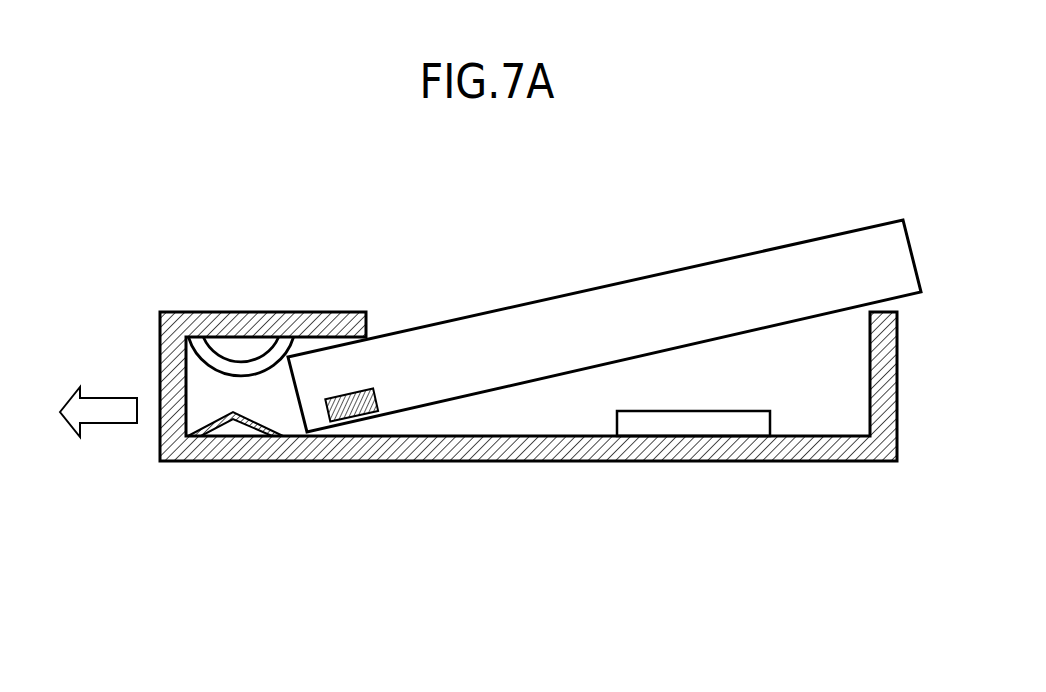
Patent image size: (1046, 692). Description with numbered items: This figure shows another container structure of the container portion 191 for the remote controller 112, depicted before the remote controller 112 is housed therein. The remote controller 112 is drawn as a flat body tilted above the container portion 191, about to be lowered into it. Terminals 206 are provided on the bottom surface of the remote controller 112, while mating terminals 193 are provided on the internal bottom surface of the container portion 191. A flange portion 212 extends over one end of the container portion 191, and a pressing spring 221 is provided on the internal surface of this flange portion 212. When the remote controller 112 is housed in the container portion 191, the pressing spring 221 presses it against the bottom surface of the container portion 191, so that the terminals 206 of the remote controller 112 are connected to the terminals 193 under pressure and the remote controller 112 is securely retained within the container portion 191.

The remote controller 112 is at (590, 289).
The container portion 191 is at (820, 362).
The terminals 193 is at (236, 413).
The terminals 206 is at (368, 416).
The flange portion 212 is at (185, 312).
The pressing spring 221 is at (236, 360).